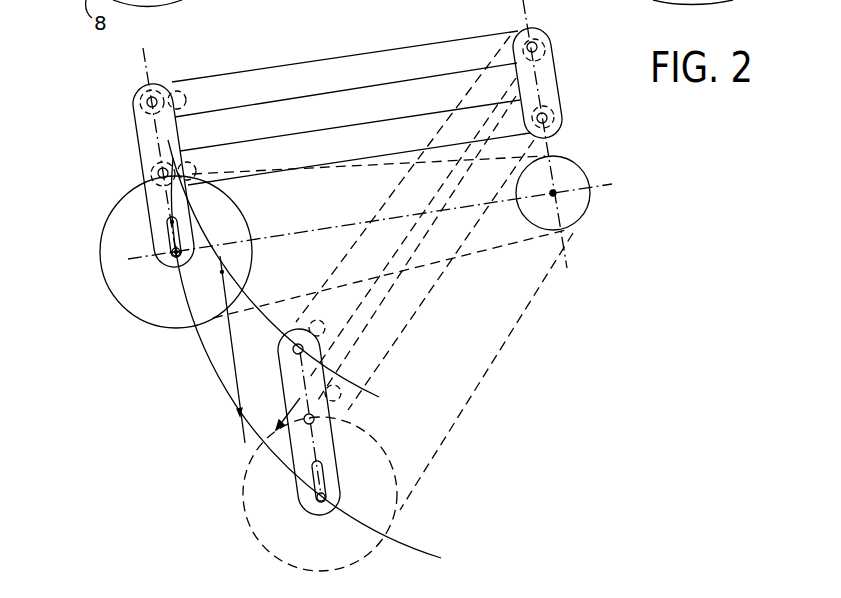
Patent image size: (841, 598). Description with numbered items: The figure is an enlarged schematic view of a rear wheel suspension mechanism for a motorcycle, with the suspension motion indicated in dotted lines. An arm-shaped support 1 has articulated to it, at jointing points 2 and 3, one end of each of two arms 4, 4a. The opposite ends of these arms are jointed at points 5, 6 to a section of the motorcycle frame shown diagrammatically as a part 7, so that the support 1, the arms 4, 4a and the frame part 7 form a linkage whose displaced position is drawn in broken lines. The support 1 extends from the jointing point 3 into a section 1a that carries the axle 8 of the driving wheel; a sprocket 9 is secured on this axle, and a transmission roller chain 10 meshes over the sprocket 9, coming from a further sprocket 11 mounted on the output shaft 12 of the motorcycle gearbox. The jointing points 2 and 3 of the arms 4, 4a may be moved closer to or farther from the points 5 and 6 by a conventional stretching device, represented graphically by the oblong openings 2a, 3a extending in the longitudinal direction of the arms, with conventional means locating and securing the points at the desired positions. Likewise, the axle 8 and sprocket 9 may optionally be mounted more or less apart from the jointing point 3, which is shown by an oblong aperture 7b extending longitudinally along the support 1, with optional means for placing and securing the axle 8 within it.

The support 1 is at (128, 125).
The section of the support 1a is at (157, 213).
The jointing point 2 is at (147, 100).
The oblong opening 2a is at (178, 96).
The jointing point 3 is at (157, 168).
The oblong opening 3a is at (192, 173).
The arm 4 is at (253, 83).
The arm 4a is at (285, 153).
The jointing point 5 is at (538, 36).
The jointing point 6 is at (547, 117).
The frame part 7 is at (556, 75).
The oblong aperture 7b is at (172, 252).
The axle 8 is at (173, 255).
The sprocket 9 is at (154, 310).
The transmission roller chain 10 is at (268, 288).
The sprocket 11 is at (573, 178).
The output shaft 12 is at (556, 196).